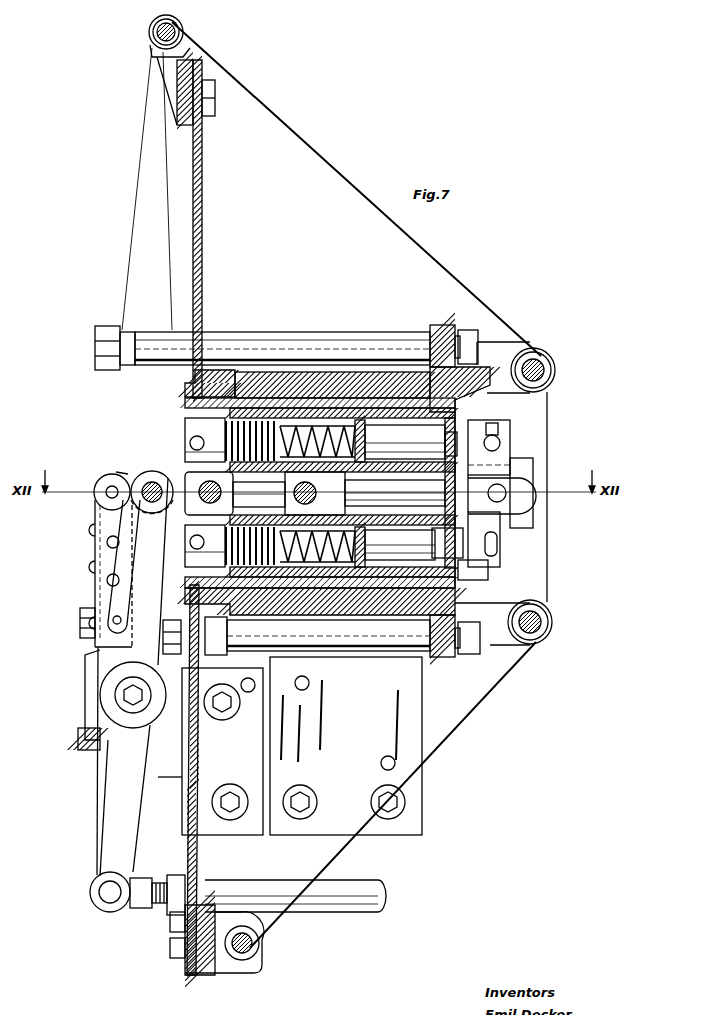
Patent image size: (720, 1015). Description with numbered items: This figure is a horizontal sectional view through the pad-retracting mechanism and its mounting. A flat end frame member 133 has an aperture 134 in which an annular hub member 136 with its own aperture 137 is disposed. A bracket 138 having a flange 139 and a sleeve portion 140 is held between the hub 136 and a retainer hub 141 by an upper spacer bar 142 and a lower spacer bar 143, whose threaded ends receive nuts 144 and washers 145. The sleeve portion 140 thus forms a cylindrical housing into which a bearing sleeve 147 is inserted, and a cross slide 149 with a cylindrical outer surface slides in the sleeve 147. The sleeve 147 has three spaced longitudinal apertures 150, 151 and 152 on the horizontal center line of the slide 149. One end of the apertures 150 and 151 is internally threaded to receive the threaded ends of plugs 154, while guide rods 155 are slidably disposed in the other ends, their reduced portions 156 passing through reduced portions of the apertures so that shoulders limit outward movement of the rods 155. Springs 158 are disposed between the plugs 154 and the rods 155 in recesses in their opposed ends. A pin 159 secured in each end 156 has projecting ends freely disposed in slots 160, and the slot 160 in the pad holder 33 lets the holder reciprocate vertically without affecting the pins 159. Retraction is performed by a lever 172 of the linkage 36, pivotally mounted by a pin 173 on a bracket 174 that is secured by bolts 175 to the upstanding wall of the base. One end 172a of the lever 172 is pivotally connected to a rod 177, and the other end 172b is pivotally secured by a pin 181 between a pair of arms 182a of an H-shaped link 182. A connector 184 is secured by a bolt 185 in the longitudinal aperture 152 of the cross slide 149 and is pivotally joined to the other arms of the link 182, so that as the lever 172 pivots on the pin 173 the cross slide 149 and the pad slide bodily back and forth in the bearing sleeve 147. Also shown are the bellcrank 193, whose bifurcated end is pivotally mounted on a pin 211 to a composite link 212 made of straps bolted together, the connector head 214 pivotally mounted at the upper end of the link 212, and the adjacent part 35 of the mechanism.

The pad holder 33 is at (503, 534).
The lever 35 is at (94, 517).
The linkage 36 is at (104, 768).
The flat end frame member 133 is at (205, 290).
The aperture 134 is at (196, 380).
The annular hub member 136 is at (186, 388).
The aperture 137 is at (186, 402).
The bracket 138 is at (420, 730).
The flange 139 is at (412, 804).
The sleeve portion 140 is at (289, 382).
The retainer hub 141 is at (436, 330).
The upper spacer bar 142 is at (410, 338).
The lower spacer bar 143 is at (362, 652).
The nuts 144 is at (470, 340).
The washers 145 is at (449, 657).
The bearing sleeve 147 is at (252, 403).
The cross slide 149 is at (456, 418).
The longitudinal aperture 150 is at (398, 442).
The longitudinal aperture 151 is at (452, 556).
The longitudinal aperture 152 is at (373, 530).
The plugs 154 is at (186, 430).
The guide rods 155 is at (398, 522).
The reduced portions 156 is at (446, 444).
The springs 158 is at (290, 452).
The pin 159 is at (501, 445).
The slots 160 is at (499, 430).
The lever 172 is at (106, 806).
The end of lever 172a is at (92, 892).
The other end of lever 172b is at (128, 480).
The pin 173 is at (133, 712).
The bracket 174 is at (166, 836).
The bolts 175 is at (232, 794).
The rod 177 is at (350, 912).
The pin 181 is at (147, 481).
The H-shaped link 182 is at (158, 512).
The arms 182a is at (157, 472).
The connector 184 is at (242, 493).
The bolt 185 is at (314, 496).
The bellcrank 193 is at (92, 672).
The pin 211 is at (80, 617).
The composite link 212 is at (94, 557).
The connector head 214 is at (106, 476).